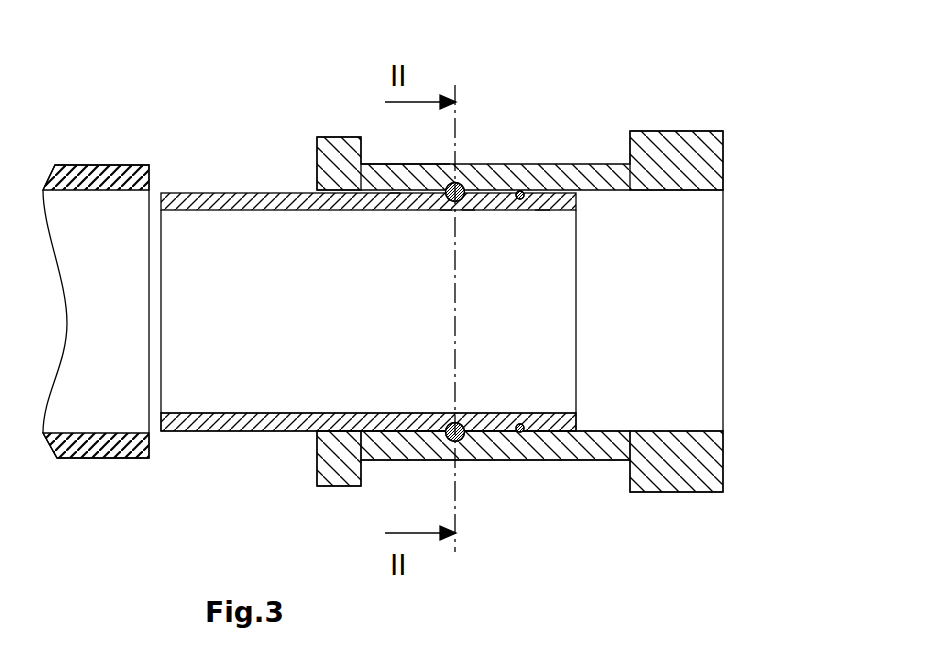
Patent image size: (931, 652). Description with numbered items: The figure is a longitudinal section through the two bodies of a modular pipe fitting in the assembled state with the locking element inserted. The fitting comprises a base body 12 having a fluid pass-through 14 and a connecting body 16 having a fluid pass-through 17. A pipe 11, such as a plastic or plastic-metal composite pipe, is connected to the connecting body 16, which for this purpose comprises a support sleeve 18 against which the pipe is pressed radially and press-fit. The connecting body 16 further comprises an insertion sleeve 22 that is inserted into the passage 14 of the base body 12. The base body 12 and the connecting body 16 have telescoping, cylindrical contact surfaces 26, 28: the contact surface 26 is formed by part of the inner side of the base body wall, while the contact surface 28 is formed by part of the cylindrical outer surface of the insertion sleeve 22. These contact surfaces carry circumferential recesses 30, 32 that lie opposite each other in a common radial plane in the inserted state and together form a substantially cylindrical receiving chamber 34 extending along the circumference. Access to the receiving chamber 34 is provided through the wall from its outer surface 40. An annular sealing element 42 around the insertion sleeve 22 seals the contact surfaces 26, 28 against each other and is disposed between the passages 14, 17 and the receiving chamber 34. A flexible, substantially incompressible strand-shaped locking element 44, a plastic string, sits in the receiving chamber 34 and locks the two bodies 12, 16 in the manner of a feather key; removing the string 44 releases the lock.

The pipe 11 is at (97, 458).
The base body 12 is at (650, 55).
The fluid pass-through 14 is at (698, 321).
The connecting body 16 is at (236, 130).
The fluid pass-through 17 is at (270, 321).
The support sleeve 18 is at (236, 431).
The insertion sleeve 22 is at (542, 210).
The contact surface 26 is at (395, 197).
The contact surface 28 is at (412, 432).
The circumferential recess 30 is at (462, 183).
The circumferential recess 32 is at (446, 203).
The receiving chamber 34 is at (472, 216).
The outer surface 40 is at (530, 462).
The annular sealing element 42 is at (524, 191).
The locking element 44 is at (445, 183).